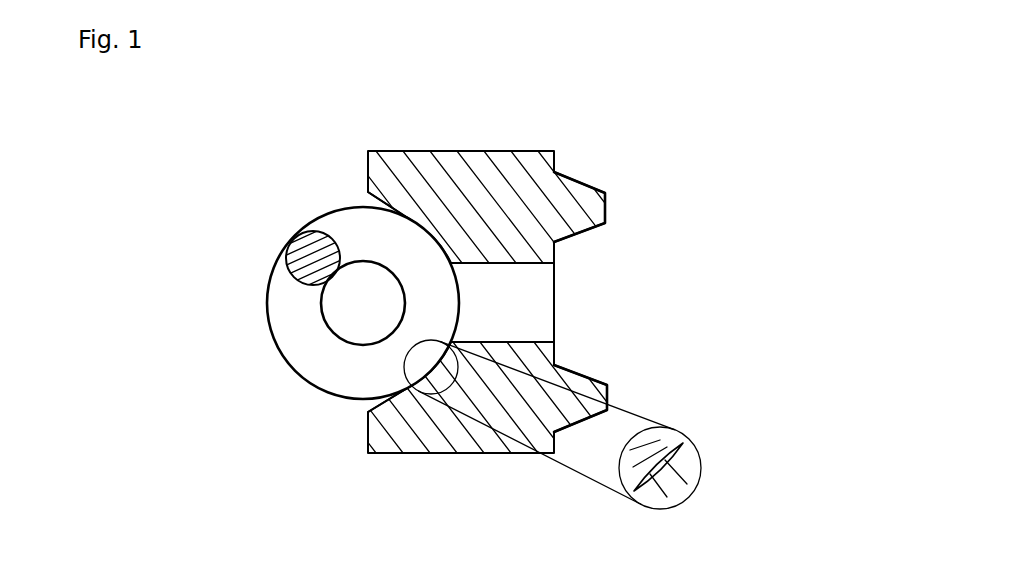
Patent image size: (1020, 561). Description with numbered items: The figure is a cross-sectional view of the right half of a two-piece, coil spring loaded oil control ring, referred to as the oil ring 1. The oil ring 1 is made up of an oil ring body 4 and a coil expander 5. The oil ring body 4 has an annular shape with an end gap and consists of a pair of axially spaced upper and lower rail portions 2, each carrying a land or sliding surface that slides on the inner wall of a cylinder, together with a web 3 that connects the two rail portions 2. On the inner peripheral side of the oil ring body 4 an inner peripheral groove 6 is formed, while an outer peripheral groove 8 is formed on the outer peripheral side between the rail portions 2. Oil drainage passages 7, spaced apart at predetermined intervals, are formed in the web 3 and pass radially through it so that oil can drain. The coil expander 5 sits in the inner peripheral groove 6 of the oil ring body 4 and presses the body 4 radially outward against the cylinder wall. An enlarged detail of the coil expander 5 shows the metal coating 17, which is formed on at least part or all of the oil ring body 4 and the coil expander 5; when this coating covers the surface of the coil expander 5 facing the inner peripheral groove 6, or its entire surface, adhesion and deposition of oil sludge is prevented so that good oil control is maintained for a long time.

The oil ring 1 is at (581, 152).
The rail portions 2 is at (583, 206).
The web 3 is at (556, 357).
The oil ring body 4 is at (722, 505).
The coil expander 5 is at (298, 307).
The inner peripheral groove 6 is at (382, 195).
The oil drainage passages 7 is at (493, 338).
The outer peripheral groove 8 is at (566, 302).
The metal coating 17 is at (683, 460).